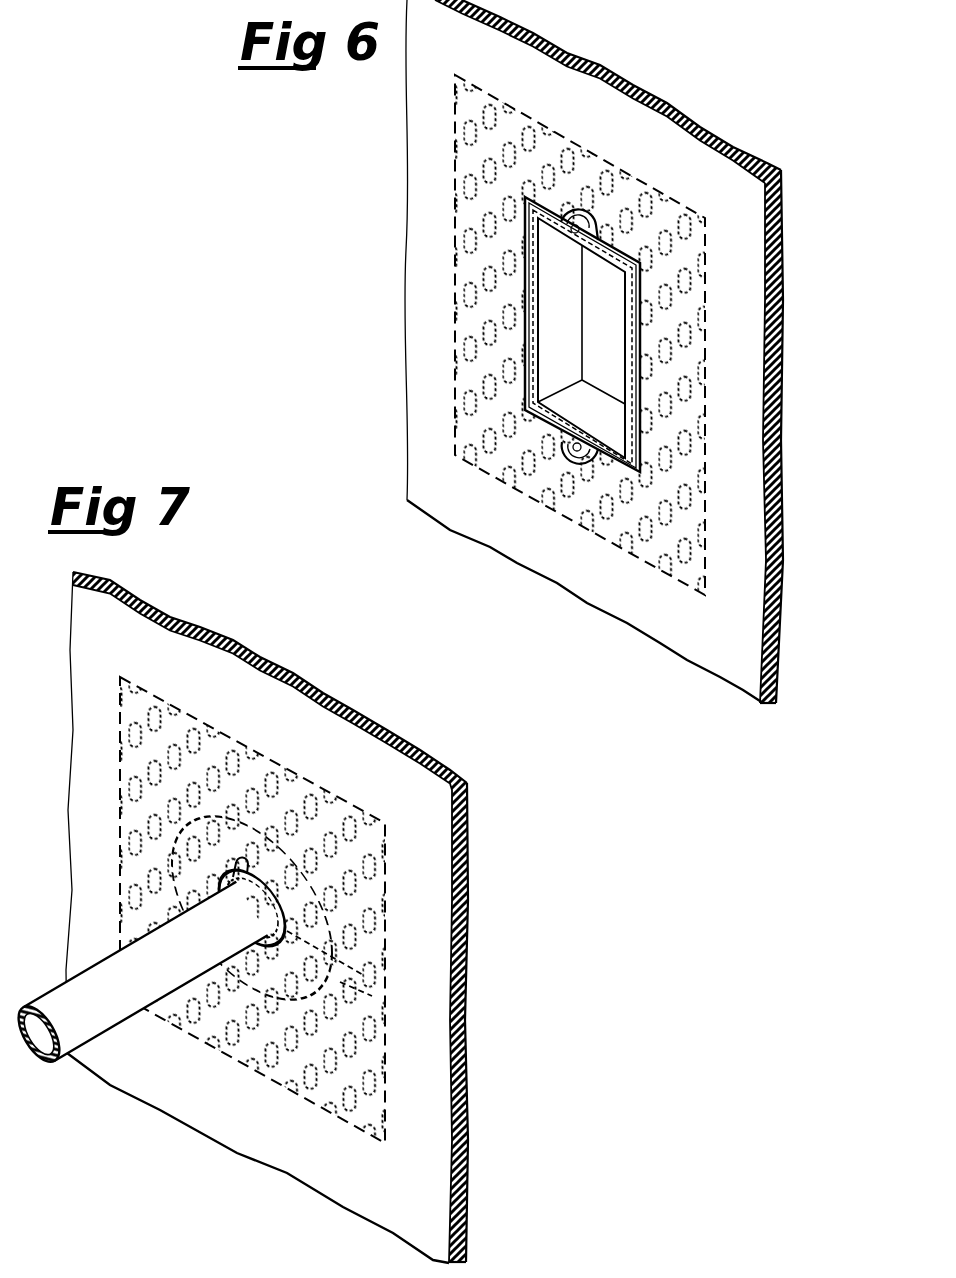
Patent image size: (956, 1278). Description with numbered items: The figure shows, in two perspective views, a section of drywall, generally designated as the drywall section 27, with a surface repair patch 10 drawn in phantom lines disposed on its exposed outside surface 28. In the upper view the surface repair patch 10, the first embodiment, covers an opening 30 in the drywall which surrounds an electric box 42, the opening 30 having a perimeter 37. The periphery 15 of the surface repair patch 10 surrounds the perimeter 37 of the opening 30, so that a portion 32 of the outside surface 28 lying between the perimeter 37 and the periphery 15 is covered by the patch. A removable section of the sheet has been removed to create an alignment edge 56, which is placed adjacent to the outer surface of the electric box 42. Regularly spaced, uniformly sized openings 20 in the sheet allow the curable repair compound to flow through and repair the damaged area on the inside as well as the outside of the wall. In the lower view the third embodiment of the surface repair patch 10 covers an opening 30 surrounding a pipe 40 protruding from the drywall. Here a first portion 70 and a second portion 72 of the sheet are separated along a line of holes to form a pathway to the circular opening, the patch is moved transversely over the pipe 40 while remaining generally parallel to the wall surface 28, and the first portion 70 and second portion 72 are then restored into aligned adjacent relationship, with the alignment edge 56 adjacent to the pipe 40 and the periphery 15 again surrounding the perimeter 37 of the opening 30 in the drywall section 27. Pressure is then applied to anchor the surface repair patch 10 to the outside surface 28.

In FIG. 6, the surface repair patch 10 is at (559, 302).
In FIG. 7, the surface repair patch 10 is at (234, 901).
In FIG. 6, the periphery 15 is at (548, 126).
In FIG. 7, the periphery 15 is at (118, 822).
In FIG. 6, the openings 20 is at (486, 165).
In FIG. 7, the openings 20 is at (172, 742).
In FIG. 6, the drywall section 27 is at (788, 362).
In FIG. 7, the drywall section 27 is at (428, 744).
In FIG. 6, the outside surface 28 is at (745, 468).
In FIG. 7, the outside surface 28 is at (430, 1120).
In FIG. 6, the opening 30 is at (525, 432).
In FIG. 7, the opening 30 is at (262, 946).
In FIG. 6, the portion 32 is at (632, 522).
In FIG. 6, the perimeter 37 is at (648, 247).
In FIG. 7, the perimeter 37 is at (238, 862).
In FIG. 7, the pipe 40 is at (60, 993).
In FIG. 6, the electric box 42 is at (582, 358).
In FIG. 6, the alignment edge 56 is at (525, 300).
In FIG. 7, the alignment edge 56 is at (262, 900).
In FIG. 7, the first portion 70 is at (363, 962).
In FIG. 7, the second portion 72 is at (368, 992).